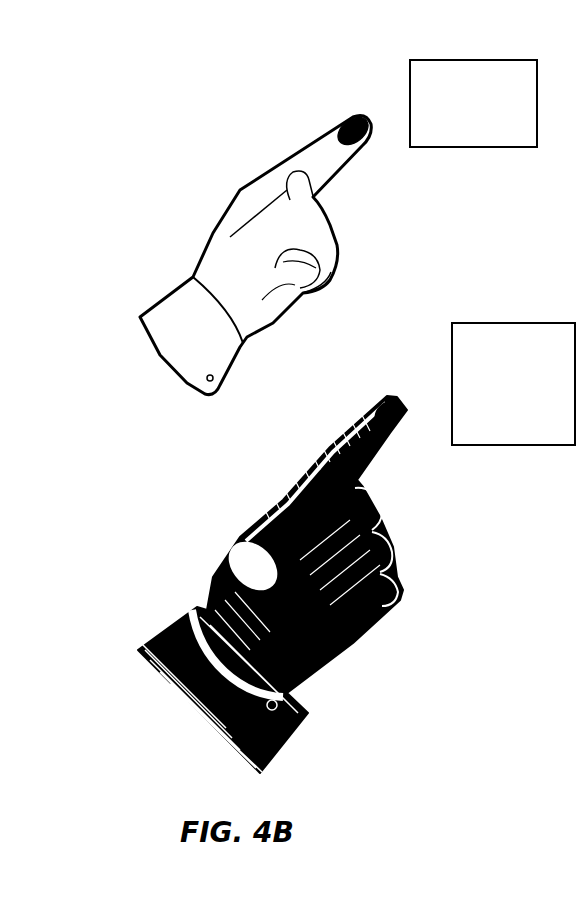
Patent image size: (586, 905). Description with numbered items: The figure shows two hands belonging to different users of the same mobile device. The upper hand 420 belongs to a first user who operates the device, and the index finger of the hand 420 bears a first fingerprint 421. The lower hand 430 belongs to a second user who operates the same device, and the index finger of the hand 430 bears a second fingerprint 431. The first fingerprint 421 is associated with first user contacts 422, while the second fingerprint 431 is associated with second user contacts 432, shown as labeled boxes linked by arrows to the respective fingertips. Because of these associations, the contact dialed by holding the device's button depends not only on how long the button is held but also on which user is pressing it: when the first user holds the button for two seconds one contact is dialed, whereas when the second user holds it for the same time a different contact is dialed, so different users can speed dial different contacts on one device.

The hand 420 is at (208, 163).
The first fingerprint 421 is at (357, 147).
The first user contacts 422 is at (368, 121).
The hand 430 is at (193, 524).
The second fingerprint 431 is at (393, 433).
The second user contacts 432 is at (407, 408).